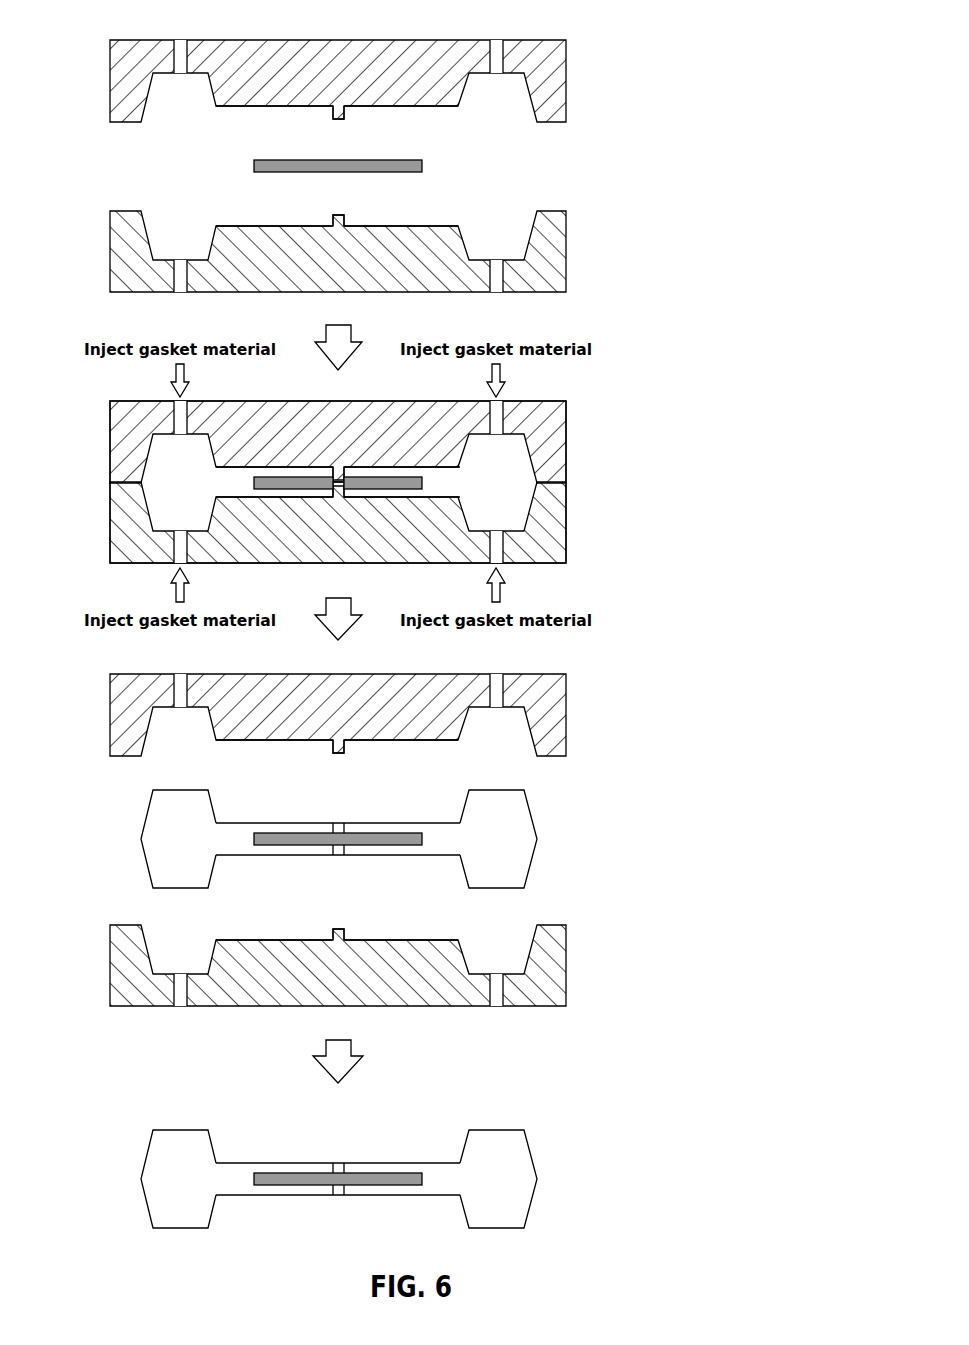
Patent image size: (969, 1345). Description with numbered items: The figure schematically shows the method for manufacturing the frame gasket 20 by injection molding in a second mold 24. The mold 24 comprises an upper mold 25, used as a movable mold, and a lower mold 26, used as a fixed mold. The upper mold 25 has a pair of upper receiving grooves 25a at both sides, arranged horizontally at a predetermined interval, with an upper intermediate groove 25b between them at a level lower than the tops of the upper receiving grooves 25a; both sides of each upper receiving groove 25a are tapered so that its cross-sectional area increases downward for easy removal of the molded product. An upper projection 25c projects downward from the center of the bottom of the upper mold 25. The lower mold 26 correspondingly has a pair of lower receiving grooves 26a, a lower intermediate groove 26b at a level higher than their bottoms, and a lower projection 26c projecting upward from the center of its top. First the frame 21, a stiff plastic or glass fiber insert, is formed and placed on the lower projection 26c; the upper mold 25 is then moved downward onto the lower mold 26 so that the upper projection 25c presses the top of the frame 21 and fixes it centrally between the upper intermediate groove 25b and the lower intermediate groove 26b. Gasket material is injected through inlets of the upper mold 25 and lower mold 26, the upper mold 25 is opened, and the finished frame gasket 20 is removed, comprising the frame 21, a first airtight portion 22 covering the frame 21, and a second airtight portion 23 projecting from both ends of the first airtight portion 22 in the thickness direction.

The frame gasket 20 is at (293, 693).
The frame 21 is at (425, 167).
The first airtight portion 22 is at (283, 825).
The second airtight portion 23 is at (160, 790).
The mold 24 is at (392, 482).
The upper mold 25 is at (567, 108).
The upper receiving grooves 25a is at (160, 88).
The upper intermediate groove 25b is at (396, 106).
The upper projection 25c is at (335, 115).
The lower mold 26 is at (567, 228).
The lower receiving grooves 26a is at (158, 256).
The lower intermediate groove 26b is at (240, 226).
The lower projection 26c is at (345, 218).